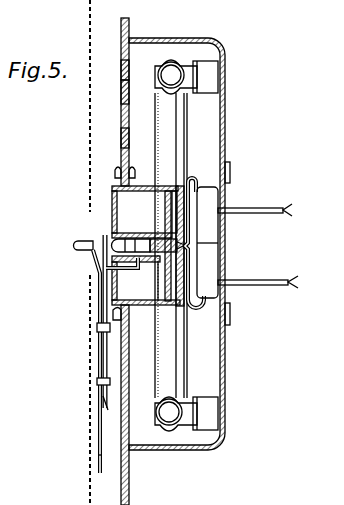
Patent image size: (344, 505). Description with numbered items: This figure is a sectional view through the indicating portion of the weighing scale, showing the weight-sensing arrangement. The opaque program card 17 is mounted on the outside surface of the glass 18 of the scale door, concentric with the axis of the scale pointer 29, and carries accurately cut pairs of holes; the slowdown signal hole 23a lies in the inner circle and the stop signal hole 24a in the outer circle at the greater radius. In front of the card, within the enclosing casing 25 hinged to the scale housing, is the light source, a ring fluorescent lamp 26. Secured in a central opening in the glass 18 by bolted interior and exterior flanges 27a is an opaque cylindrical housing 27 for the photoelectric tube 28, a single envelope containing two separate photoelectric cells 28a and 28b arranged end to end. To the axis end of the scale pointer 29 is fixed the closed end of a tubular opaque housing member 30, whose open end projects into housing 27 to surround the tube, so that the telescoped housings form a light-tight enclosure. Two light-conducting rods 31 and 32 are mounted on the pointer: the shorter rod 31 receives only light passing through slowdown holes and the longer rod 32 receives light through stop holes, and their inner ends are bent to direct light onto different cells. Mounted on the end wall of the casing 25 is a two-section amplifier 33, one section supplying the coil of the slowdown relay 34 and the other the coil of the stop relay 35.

The program card 17 is at (130, 137).
The glass 18 is at (130, 28).
The slowdown signal hole 23a is at (132, 84).
The stop signal hole 24a is at (132, 72).
The enclosing casing 25 is at (225, 124).
The ring fluorescent lamp 26 is at (177, 141).
The opaque cylindrical housing 27 is at (181, 318).
The interior and exterior flanges 27a is at (118, 160).
The photoelectric tube 28 is at (153, 256).
The photoelectric cell 28a is at (133, 240).
The photoelectric cell 28b is at (108, 237).
The scale pointer 29 is at (98, 452).
The tubular opaque housing member 30 is at (150, 230).
The light-conducting rod 31 is at (107, 350).
The light-conducting rod 32 is at (108, 413).
The amplifier 33 is at (212, 252).
The slowdown relay 34 is at (270, 287).
The stop relay 35 is at (260, 206).